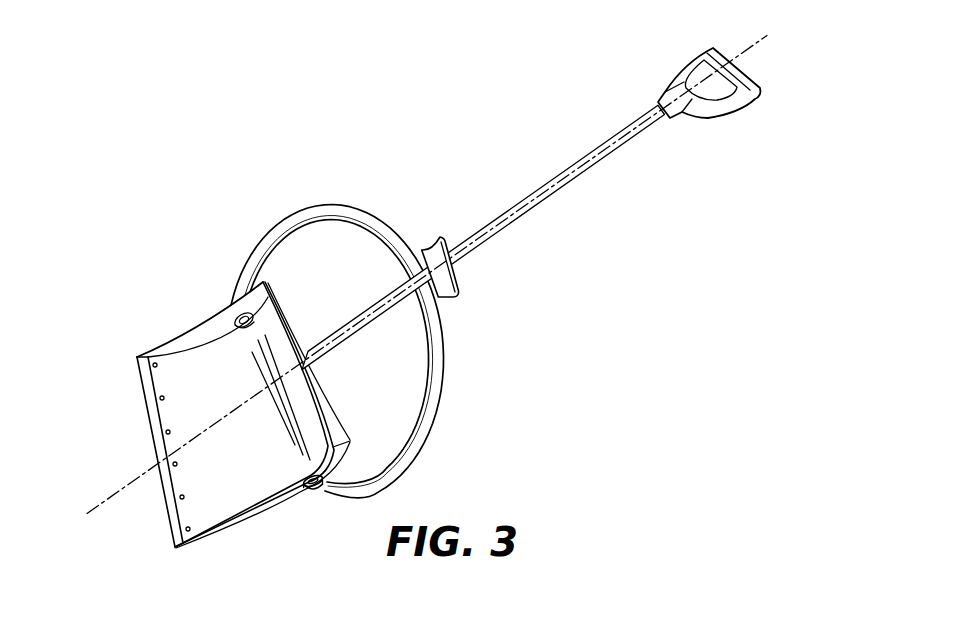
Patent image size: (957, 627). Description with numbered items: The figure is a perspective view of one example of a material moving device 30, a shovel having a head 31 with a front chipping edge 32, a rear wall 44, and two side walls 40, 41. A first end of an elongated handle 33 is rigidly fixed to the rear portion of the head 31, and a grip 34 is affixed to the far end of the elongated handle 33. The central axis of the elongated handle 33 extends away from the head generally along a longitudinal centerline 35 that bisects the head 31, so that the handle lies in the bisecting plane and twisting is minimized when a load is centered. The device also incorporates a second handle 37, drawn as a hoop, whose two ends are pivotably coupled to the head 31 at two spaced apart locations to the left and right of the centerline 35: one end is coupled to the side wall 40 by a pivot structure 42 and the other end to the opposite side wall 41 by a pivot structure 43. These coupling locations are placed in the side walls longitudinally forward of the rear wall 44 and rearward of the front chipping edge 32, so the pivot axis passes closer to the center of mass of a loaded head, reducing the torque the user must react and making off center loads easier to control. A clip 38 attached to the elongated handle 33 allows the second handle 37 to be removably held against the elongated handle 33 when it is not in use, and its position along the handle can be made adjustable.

The material moving device 30 is at (184, 80).
The head 31 is at (201, 376).
The front chipping edge 32 is at (158, 437).
The elongated handle 33 is at (612, 137).
The grip 34 is at (712, 48).
The longitudinal centerline 35 is at (757, 46).
The second handle 37 is at (442, 368).
The clip 38 is at (458, 296).
The side wall 40 is at (255, 520).
The opposite side wall 41 is at (168, 342).
The pivot structure 42 is at (306, 497).
The pivot structure 43 is at (224, 312).
The rear wall 44 is at (291, 327).